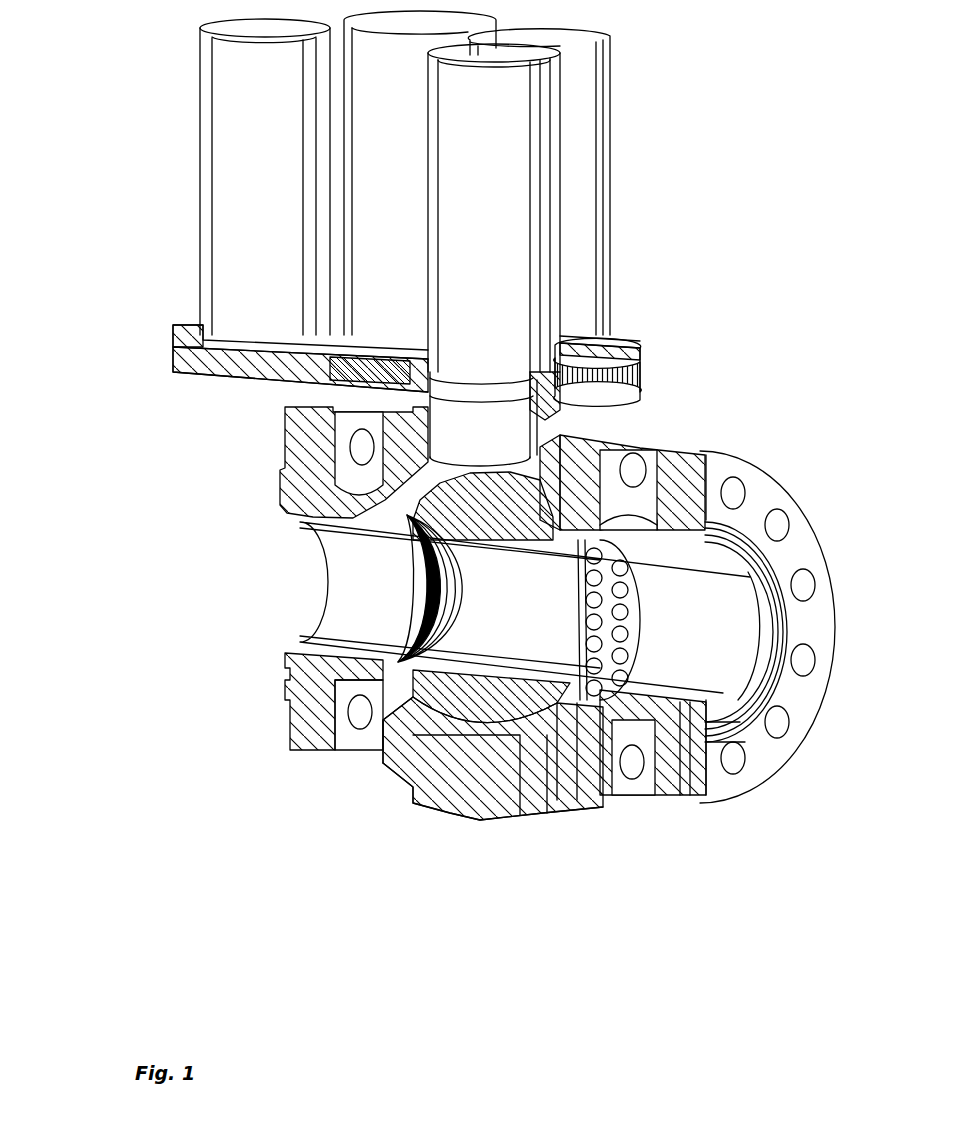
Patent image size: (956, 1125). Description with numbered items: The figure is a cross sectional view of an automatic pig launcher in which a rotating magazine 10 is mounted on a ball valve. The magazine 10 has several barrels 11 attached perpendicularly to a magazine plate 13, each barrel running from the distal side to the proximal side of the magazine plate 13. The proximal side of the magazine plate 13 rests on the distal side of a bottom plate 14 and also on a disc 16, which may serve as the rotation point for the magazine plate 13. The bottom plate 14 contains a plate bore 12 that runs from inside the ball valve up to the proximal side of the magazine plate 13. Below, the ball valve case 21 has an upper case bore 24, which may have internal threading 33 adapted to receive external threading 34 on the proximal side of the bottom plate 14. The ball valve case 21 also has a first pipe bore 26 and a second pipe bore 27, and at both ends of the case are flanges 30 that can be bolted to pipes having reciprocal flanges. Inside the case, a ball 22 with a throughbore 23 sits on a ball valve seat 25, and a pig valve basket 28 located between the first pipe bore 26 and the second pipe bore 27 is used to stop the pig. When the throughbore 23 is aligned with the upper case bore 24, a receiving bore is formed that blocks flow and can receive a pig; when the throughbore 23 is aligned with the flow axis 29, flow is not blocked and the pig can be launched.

The magazine 10 is at (183, 18).
The barrels 11 is at (500, 100).
The plate bore 12 is at (500, 383).
The magazine plate 13 is at (612, 352).
The bottom plate 14 is at (212, 372).
The disc 16 is at (345, 377).
The ball valve case 21 is at (445, 780).
The ball 22 is at (479, 705).
The throughbore 23 is at (532, 628).
The upper case bore 24 is at (478, 422).
The ball valve seat 25 is at (435, 708).
The first pipe bore 26 is at (699, 677).
The second pipe bore 27 is at (323, 628).
The pig valve basket 28 is at (597, 655).
The flow axis 29 is at (855, 648).
The flanges 30 is at (763, 493).
The internal threading 33 is at (430, 425).
The external threading 34 is at (530, 447).